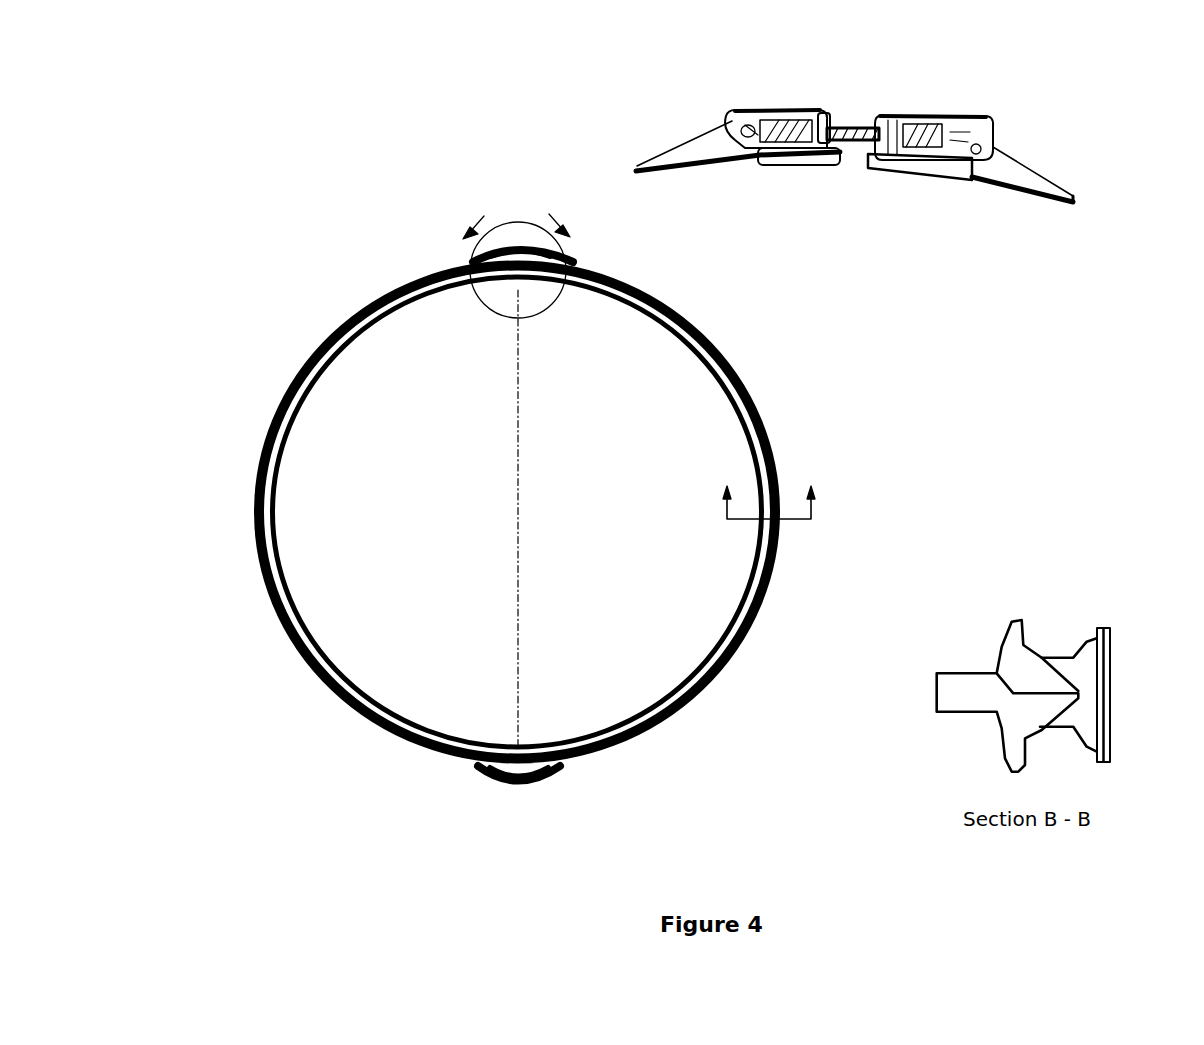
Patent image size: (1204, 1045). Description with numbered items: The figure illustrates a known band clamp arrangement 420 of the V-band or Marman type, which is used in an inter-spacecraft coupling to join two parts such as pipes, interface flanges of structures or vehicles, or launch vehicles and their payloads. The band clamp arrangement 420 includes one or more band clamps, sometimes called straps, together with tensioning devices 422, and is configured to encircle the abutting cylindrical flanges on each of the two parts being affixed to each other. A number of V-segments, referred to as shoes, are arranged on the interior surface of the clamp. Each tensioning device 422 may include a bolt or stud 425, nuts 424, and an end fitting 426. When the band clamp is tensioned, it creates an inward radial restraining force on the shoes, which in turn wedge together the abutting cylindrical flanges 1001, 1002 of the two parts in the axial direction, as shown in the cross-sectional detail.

The band clamp arrangement 420 is at (432, 176).
The tensioning device 422 is at (503, 244).
The nut 424 is at (793, 110).
The bolt or stud 425 is at (883, 117).
The end fitting 426 is at (826, 115).
The cylindrical flange 1001 is at (962, 712).
The cylindrical flange 1002 is at (1004, 641).